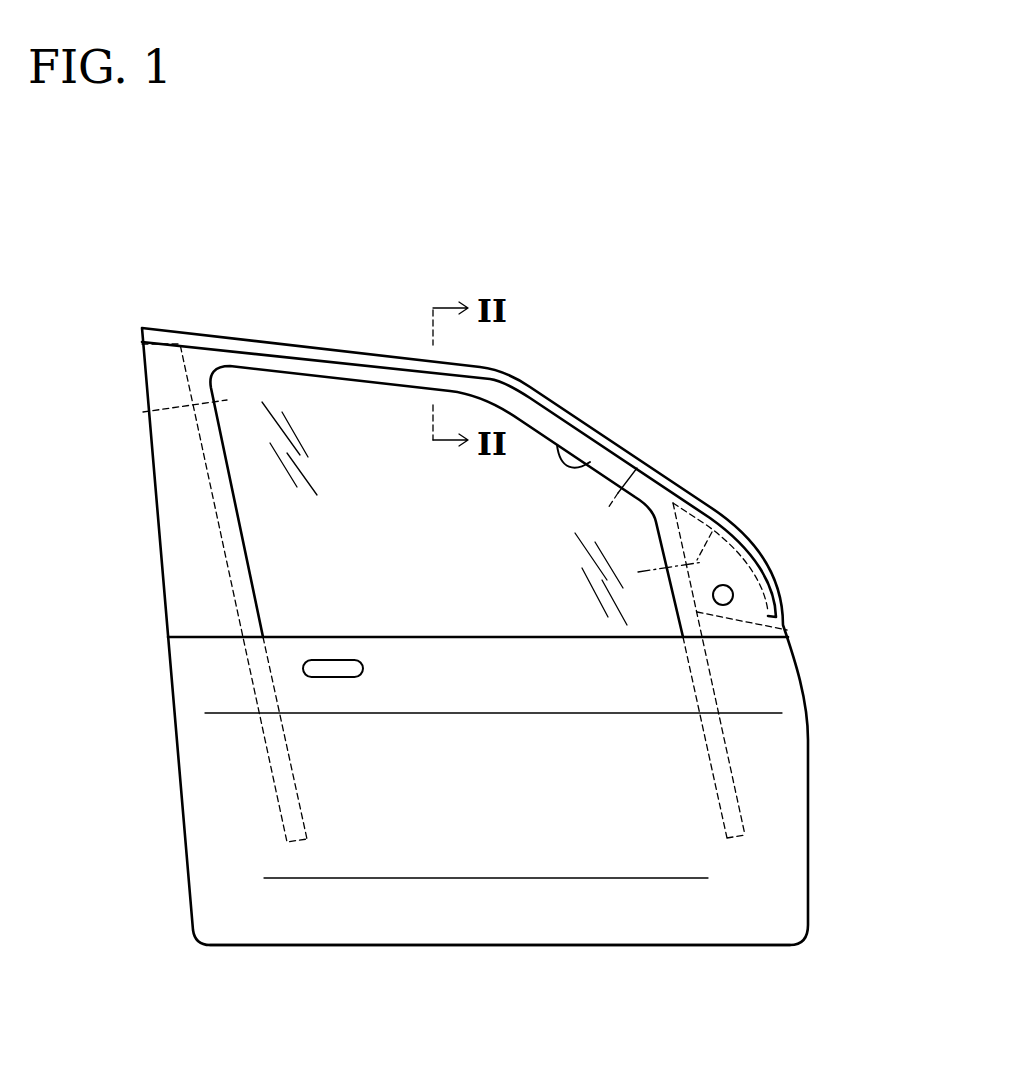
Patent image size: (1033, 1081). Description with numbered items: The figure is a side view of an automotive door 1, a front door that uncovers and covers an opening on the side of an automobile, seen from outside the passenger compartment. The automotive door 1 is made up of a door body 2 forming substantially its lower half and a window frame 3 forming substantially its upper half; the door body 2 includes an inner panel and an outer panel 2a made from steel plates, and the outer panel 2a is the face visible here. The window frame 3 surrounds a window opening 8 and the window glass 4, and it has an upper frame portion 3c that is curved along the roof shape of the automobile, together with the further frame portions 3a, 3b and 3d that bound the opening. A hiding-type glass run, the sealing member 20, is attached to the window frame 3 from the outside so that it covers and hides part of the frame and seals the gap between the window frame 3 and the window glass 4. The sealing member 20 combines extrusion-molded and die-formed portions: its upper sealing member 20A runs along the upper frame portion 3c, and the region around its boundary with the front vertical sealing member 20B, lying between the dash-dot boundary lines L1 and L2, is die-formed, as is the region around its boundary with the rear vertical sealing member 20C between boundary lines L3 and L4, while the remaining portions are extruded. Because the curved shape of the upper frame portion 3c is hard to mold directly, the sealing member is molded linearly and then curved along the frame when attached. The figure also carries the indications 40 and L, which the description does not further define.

The automotive door 1 is at (140, 687).
The door body 2 is at (185, 850).
The outer panel 2a is at (493, 922).
The window frame 3 is at (148, 443).
The rear corner portion of door frame 3a is at (672, 553).
The front frame portion 3b is at (175, 517).
The upper frame portion 3c is at (555, 400).
The rear frame portion 3d is at (720, 570).
The window glass 4 is at (335, 410).
The window opening 8 is at (588, 470).
The sealing member 20 is at (410, 352).
The upper sealing member 20A is at (508, 395).
The front vertical sealing member 20B is at (787, 630).
The rear vertical sealing member 20C is at (227, 562).
The glass run 40 is at (290, 337).
The molding length L is at (538, 292).
The boundary line L1 is at (612, 500).
The boundary line L2 is at (730, 521).
The boundary line L3 is at (233, 340).
The boundary line L4 is at (165, 400).